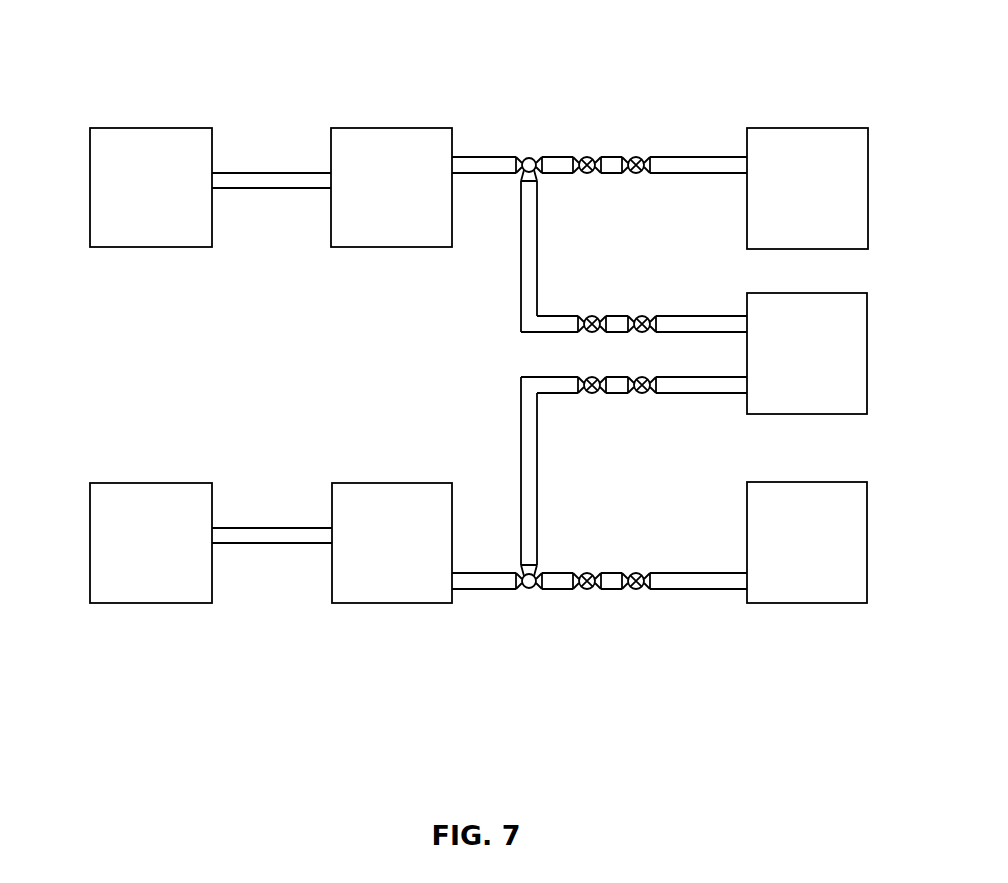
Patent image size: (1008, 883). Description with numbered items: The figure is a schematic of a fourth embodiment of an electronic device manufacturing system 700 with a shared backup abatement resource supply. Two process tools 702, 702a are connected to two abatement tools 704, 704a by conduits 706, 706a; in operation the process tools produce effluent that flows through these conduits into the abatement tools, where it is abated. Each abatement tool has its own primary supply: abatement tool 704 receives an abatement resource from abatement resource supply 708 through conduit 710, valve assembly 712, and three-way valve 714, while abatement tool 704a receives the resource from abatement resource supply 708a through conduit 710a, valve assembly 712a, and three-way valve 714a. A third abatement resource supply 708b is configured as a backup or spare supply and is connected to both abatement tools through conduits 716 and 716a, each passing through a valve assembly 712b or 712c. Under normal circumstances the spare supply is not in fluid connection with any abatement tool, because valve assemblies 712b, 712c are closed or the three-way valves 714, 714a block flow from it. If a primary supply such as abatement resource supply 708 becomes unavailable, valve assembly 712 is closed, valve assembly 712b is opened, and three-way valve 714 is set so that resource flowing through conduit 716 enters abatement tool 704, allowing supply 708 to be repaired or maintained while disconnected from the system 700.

The electronic device manufacturing system 700 is at (422, 40).
The process tool 702 is at (150, 128).
The process tool 702a is at (150, 483).
The abatement tool 704 is at (390, 128).
The abatement tool 704a is at (405, 483).
The conduit 706 is at (272, 173).
The conduit 706a is at (287, 528).
The abatement resource supply 708 is at (802, 128).
The abatement resource supply 708a is at (770, 482).
The abatement resource supply 708b is at (800, 414).
The conduit 710 is at (723, 157).
The conduit 710a is at (693, 590).
The valve assembly 712 is at (607, 140).
The valve assembly 712a is at (618, 613).
The valve assembly 712b is at (625, 297).
The valve assembly 712c is at (615, 410).
The three-way valve 714 is at (529, 157).
The three-way valve 714a is at (527, 590).
The conduit 716 is at (522, 270).
The conduit 716a is at (520, 423).